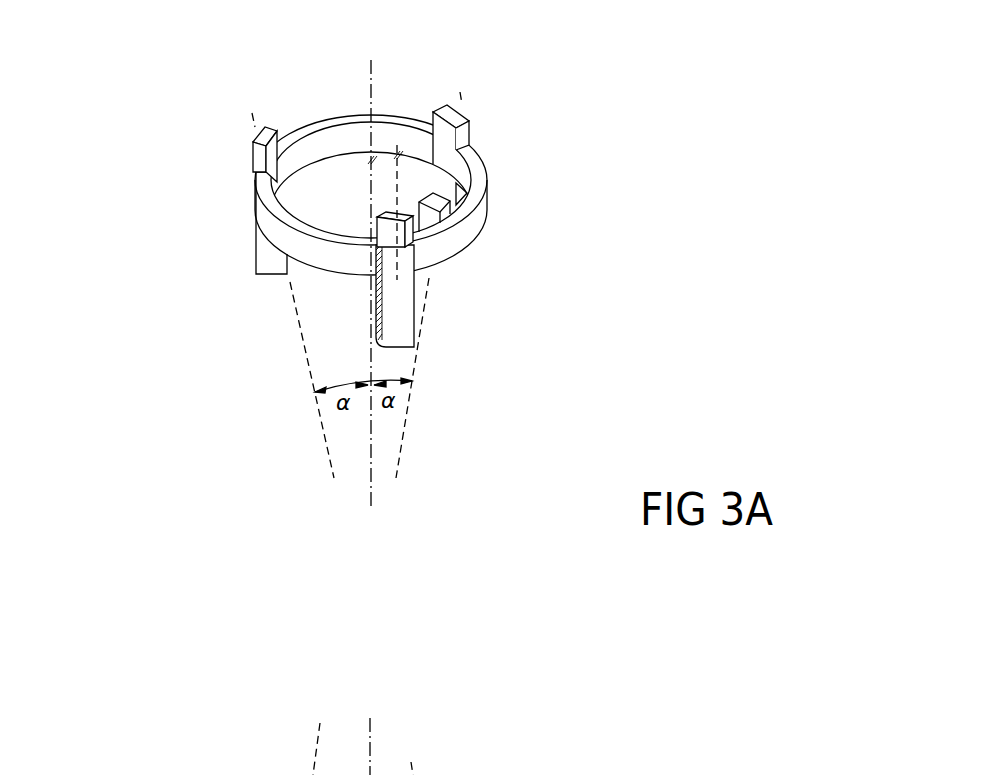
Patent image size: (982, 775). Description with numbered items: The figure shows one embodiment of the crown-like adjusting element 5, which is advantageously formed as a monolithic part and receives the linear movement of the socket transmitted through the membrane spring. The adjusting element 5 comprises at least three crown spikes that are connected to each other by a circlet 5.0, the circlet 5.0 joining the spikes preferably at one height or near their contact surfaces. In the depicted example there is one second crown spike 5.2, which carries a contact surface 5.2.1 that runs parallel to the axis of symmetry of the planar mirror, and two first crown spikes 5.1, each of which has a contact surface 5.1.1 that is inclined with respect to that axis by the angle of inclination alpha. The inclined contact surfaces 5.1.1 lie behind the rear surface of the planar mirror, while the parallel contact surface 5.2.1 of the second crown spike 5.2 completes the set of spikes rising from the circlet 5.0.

The crown-like adjusting element 5 is at (580, 252).
The circlet 5.0 is at (308, 150).
The first crown spike 5.1 is at (268, 252).
The inclined contact surface 5.1.1 is at (257, 158).
The second crown spike 5.2 is at (397, 321).
The parallel contact surface 5.2.1 is at (363, 248).